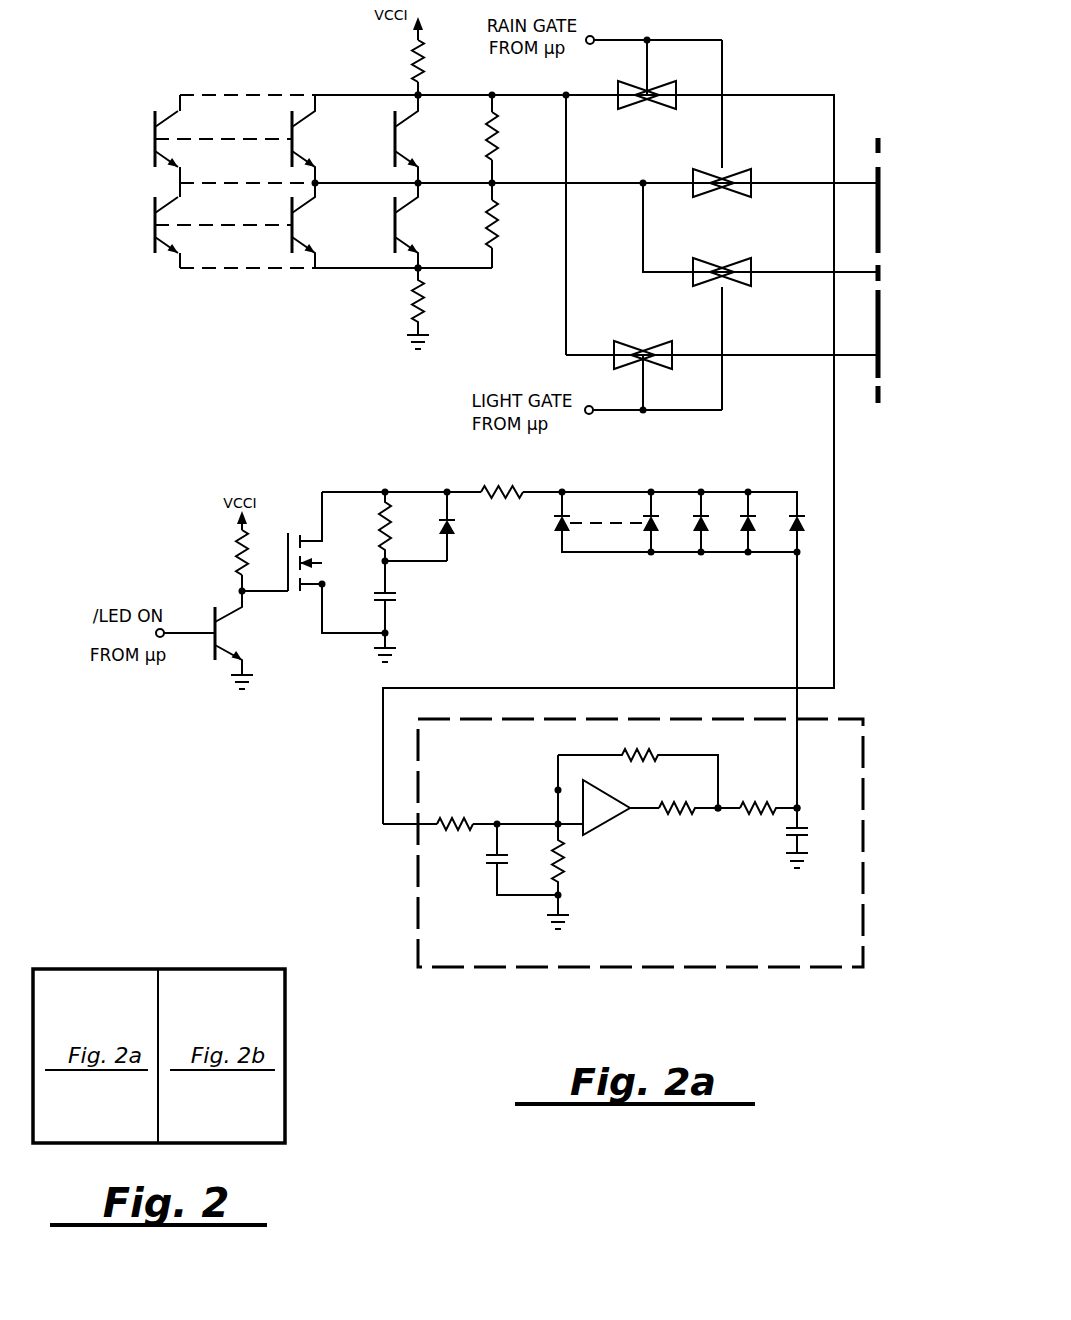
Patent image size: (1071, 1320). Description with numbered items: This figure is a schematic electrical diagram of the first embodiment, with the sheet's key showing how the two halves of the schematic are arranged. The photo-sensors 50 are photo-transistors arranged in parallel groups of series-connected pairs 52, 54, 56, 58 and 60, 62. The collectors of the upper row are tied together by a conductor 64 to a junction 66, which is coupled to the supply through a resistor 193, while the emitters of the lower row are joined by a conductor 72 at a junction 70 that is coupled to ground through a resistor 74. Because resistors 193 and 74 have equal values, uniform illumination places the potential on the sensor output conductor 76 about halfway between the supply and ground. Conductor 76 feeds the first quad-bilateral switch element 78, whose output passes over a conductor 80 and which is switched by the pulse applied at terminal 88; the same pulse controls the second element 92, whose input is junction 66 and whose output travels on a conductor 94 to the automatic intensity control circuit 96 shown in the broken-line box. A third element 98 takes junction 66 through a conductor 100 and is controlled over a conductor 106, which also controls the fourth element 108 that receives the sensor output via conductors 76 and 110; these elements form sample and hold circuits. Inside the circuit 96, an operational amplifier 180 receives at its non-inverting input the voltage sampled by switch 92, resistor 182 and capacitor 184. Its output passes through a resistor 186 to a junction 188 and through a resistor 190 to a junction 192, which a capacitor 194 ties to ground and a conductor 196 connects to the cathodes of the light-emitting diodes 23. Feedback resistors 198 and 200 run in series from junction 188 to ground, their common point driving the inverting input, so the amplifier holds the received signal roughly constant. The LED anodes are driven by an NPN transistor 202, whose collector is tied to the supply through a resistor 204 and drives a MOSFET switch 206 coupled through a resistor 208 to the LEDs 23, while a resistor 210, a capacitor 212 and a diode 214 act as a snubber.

The photo-sensors 50 is at (242, 86).
The photo-transistor 52 is at (410, 138).
The photo-transistor 54 is at (410, 226).
The photo-transistor 56 is at (302, 130).
The photo-transistor 58 is at (302, 222).
The photo-transistor 60 is at (172, 128).
The photo-transistor 62 is at (172, 215).
The conductor 64 is at (455, 93).
The junction 66 is at (416, 92).
The junction 70 is at (416, 272).
The conductor 72 is at (332, 267).
The resistor 74 is at (425, 313).
The sensor output conductor 76 is at (331, 182).
The first element of quad-bilateral switch 78 is at (713, 168).
The conductor 80 is at (811, 181).
The terminal 88 is at (606, 37).
The second element of quad-bilateral switch 92 is at (641, 104).
The conductor 94 is at (797, 93).
The automatic intensity control circuit 96 is at (661, 970).
The third element of quad-bilateral switch 98 is at (640, 343).
The conductor 100 is at (567, 236).
The conductor 106 is at (605, 414).
The fourth element of quad-bilateral switch 108 is at (713, 258).
The conductor 110 is at (643, 244).
The operational amplifier 180 is at (610, 790).
The resistor 182 is at (456, 820).
The capacitor 184 is at (487, 860).
The resistor 186 is at (678, 813).
The junction 188 is at (719, 812).
The resistor 190 is at (749, 805).
The junction 192 is at (801, 808).
The resistor 193 is at (416, 62).
The capacitor 194 is at (804, 832).
The conductor 196 is at (797, 623).
The feedback resistor 198 is at (648, 754).
The feedback resistor 200 is at (564, 861).
The NPN transistor 202 is at (229, 634).
The resistor 204 is at (238, 556).
The MOSFET switch 206 is at (297, 532).
The resistor 208 is at (504, 488).
The resistor 210 is at (378, 537).
The capacitor 212 is at (396, 595).
The diode 214 is at (456, 526).
The light-emitting diodes 23 is at (636, 561).